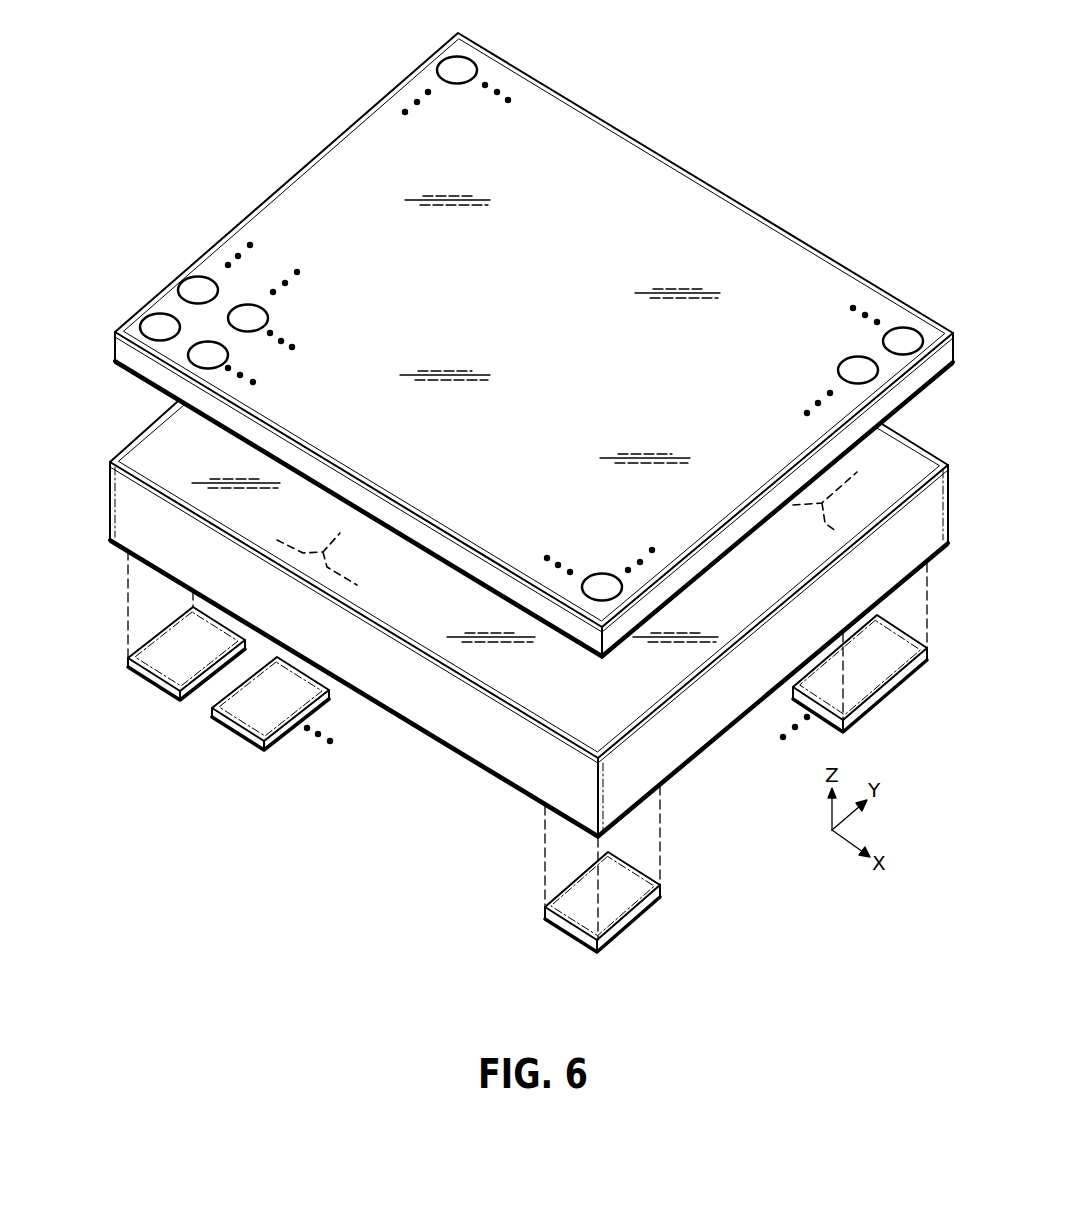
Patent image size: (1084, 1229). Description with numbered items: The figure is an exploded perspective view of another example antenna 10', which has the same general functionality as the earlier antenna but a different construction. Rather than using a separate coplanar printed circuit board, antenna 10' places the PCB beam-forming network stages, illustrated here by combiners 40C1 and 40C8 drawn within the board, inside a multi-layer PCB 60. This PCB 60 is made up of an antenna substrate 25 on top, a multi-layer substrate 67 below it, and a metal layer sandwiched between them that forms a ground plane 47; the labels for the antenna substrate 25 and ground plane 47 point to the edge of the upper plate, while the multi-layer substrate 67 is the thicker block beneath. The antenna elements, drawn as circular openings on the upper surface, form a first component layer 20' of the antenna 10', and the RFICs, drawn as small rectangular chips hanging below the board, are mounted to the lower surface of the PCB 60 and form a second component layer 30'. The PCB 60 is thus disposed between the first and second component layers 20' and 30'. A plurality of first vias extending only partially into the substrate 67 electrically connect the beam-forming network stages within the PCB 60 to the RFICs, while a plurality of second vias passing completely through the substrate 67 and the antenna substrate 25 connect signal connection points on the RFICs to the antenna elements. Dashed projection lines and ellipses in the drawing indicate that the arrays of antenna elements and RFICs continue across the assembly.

The antenna 10' is at (501, 510).
The first component layer 20' is at (525, 345).
The antenna substrate 25 is at (953, 362).
The ground plane 47 is at (902, 410).
The multi-layer PCB 60 is at (501, 435).
The multi-layer substrate 67 is at (110, 517).
The combiner 40C1 is at (330, 568).
The combiner 40C8 is at (822, 522).
The second component layer 30' is at (518, 769).